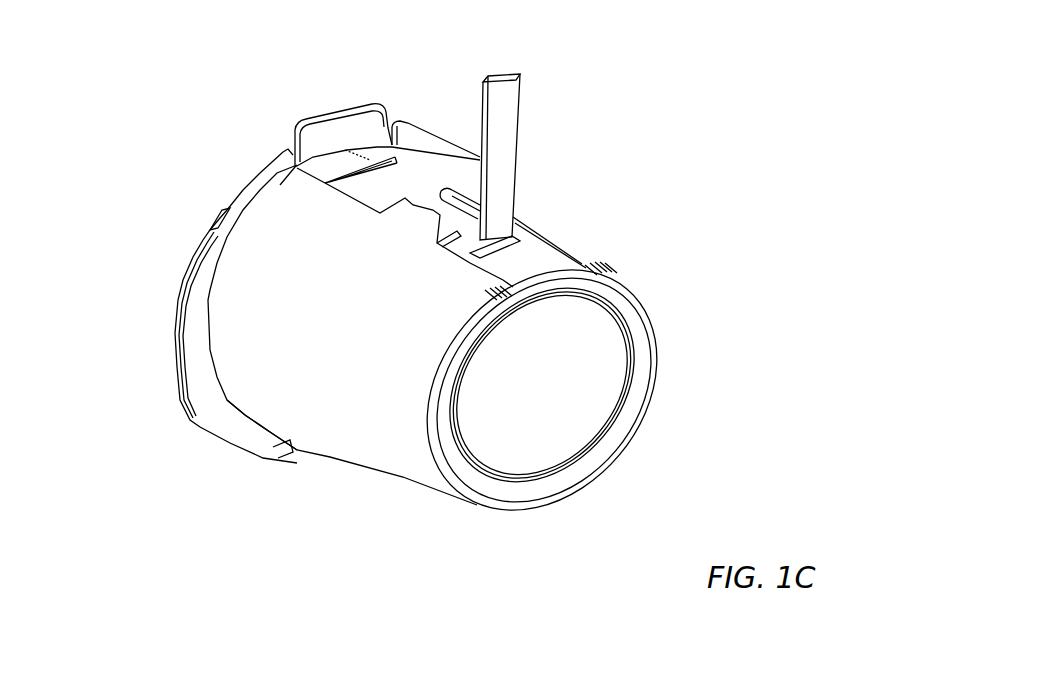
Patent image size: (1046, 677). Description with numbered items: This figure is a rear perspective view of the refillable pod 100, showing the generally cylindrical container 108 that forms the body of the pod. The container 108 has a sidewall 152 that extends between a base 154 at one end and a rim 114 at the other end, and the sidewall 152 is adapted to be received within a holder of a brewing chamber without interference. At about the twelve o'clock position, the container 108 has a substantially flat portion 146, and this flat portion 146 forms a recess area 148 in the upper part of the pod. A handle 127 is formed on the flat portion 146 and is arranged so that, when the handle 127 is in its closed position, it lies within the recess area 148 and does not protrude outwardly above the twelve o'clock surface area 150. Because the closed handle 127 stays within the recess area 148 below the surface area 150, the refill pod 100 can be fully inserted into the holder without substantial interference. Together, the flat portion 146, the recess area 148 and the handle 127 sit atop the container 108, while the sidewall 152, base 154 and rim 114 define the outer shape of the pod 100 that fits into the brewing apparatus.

The refillable pod 100 is at (695, 115).
The container 108 is at (612, 198).
The rim 114 is at (202, 320).
The handle 127 is at (530, 107).
The flat portion 146 is at (530, 263).
The recess area 148 is at (403, 188).
The 12 O'clock surface area 150 is at (340, 162).
The sidewall 152 is at (377, 415).
The base 154 is at (567, 403).